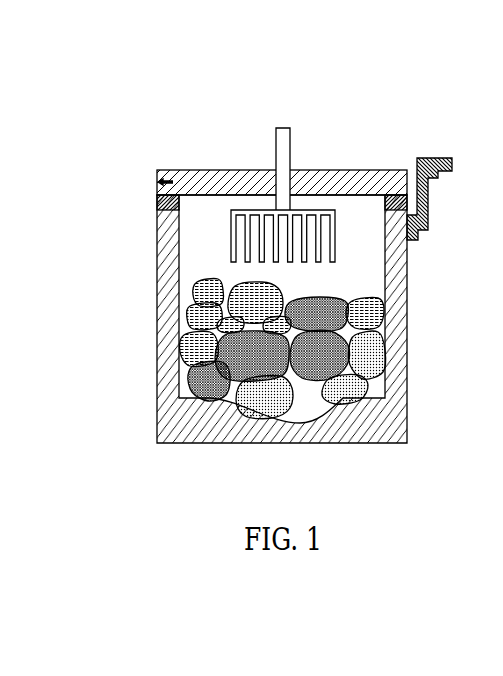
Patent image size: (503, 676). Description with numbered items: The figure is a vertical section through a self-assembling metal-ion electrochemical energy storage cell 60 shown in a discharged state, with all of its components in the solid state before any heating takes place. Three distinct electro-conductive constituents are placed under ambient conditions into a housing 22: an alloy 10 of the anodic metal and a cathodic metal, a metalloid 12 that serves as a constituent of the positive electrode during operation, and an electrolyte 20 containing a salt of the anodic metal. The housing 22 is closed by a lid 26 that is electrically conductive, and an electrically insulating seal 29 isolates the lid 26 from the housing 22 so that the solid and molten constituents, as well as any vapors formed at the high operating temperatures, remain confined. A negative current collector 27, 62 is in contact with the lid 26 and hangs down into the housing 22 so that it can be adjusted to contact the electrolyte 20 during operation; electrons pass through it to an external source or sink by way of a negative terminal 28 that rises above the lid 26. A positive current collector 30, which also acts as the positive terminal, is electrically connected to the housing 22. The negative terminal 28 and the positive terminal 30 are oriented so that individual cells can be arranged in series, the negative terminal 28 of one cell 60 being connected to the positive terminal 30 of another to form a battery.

The electrochemical energy storage cell 60 is at (111, 104).
The alloy 10 is at (212, 397).
The metalloid 12 is at (364, 333).
The electrolyte 20 is at (200, 305).
The housing 22 is at (391, 425).
The lid 26 is at (212, 172).
The negative current collector 27 is at (336, 237).
The negative terminal 28 is at (277, 129).
The electrically insulating seal 29 is at (157, 198).
The positive current collector 30 is at (428, 160).
The negative current collector 62 is at (273, 211).